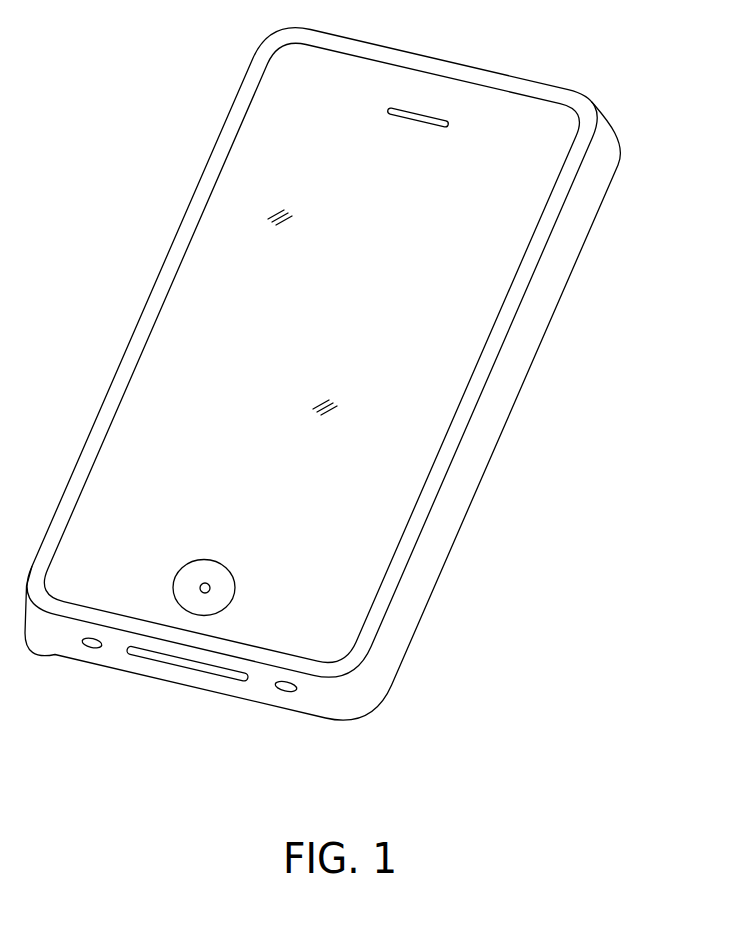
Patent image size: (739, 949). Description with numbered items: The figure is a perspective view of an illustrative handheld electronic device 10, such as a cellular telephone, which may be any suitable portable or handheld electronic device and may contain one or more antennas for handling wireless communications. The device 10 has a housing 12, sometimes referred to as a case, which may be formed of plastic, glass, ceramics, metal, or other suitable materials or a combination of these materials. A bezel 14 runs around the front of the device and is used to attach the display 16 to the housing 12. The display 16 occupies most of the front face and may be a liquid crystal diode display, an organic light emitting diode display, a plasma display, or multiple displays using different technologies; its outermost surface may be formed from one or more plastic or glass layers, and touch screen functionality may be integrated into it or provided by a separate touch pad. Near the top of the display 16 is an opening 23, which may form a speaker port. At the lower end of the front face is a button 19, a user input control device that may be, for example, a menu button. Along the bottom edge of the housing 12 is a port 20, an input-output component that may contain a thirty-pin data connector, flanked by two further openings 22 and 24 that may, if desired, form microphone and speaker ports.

The handheld electronic device 10 is at (656, 71).
The housing 12 is at (440, 525).
The bezel 14 is at (167, 271).
The display 16 is at (520, 213).
The button 19 is at (193, 615).
The port 20 is at (224, 679).
The opening 22 is at (95, 650).
The opening 23 is at (413, 110).
The opening 24 is at (289, 692).